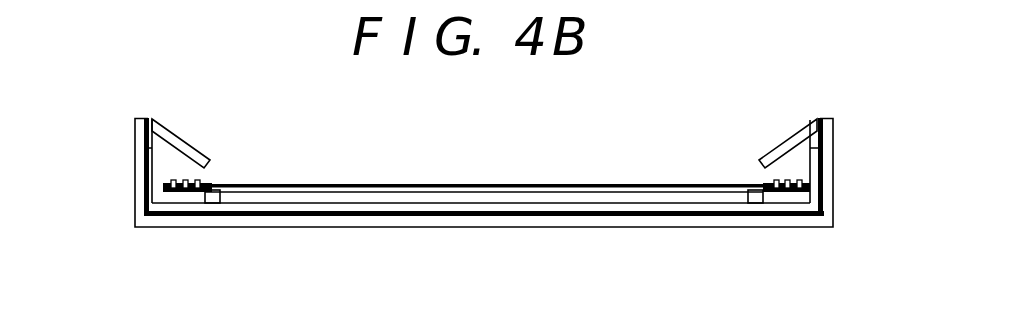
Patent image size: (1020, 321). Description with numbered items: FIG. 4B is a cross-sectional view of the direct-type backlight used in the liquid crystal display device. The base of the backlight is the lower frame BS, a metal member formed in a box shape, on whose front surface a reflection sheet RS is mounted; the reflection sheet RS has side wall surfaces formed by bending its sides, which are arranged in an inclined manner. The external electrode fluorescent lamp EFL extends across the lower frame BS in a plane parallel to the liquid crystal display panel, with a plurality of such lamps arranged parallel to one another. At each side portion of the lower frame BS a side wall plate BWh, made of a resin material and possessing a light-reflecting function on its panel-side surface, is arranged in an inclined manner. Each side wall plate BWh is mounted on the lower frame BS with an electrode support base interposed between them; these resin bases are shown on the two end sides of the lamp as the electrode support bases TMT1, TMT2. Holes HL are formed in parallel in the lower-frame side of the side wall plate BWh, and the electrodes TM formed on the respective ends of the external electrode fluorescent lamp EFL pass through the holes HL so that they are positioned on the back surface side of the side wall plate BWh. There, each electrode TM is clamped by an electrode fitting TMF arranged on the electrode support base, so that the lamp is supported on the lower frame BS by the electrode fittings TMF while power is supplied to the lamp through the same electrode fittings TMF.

The lower frame BS is at (416, 220).
The electrode fitting TMF is at (145, 180).
The electrode support base TMT1 is at (155, 190).
The electrode support base TMT2 is at (818, 199).
The side wall plate BWh is at (187, 143).
The reflection sheet RS is at (625, 205).
The hole HL is at (215, 178).
The external electrode fluorescent lamp EFL is at (548, 183).
The electrode TM is at (205, 190).